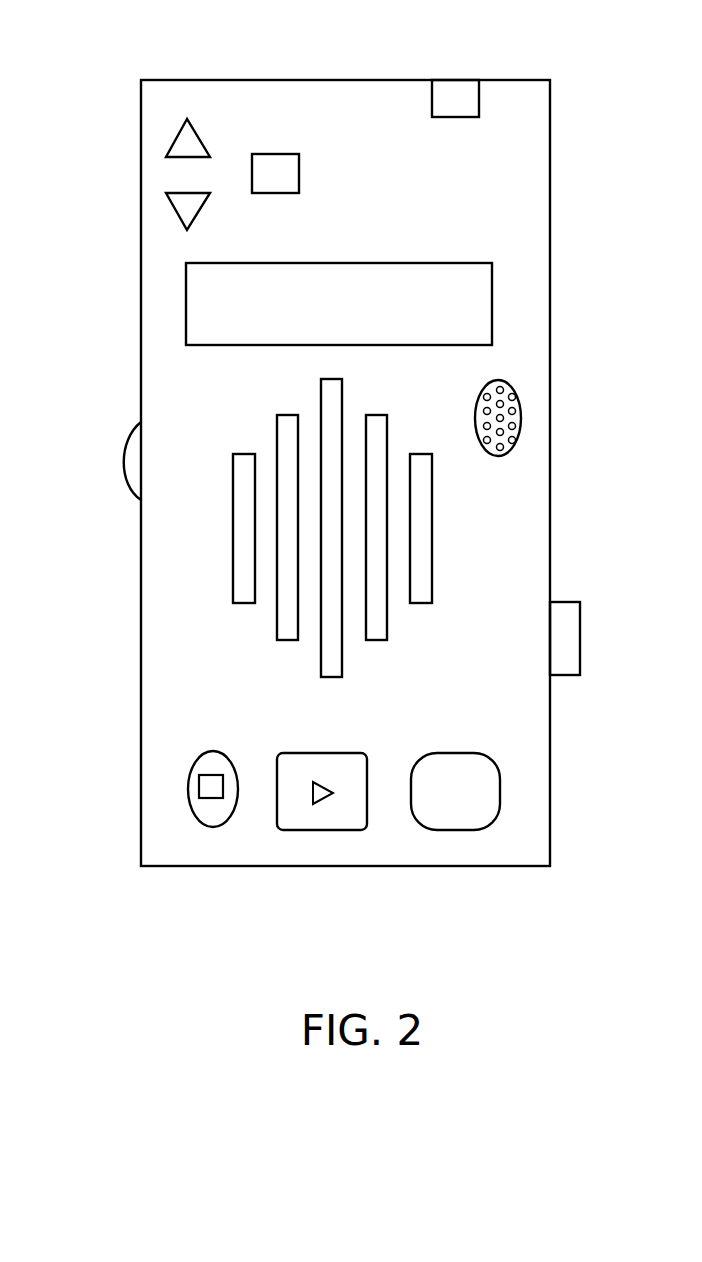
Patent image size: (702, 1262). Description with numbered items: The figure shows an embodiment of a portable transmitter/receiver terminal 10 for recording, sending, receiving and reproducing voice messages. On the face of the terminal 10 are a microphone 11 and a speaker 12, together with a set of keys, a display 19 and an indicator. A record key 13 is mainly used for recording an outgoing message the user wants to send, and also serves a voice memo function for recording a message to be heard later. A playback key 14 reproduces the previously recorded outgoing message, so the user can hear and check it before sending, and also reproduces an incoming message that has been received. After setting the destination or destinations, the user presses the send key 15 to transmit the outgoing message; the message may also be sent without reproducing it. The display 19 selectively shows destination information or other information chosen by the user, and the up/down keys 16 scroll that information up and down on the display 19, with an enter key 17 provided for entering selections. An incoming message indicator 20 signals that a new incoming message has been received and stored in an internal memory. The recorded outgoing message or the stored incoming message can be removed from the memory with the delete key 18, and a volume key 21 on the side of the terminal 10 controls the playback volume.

The portable transmitter/receiver terminal 10 is at (513, 940).
The microphone 11 is at (522, 410).
The speaker 12 is at (244, 436).
The record key 13 is at (215, 752).
The playback key 14 is at (320, 829).
The send key 15 is at (465, 754).
The up/down keys 16 is at (183, 203).
The enter key 17 is at (299, 178).
The delete key 18 is at (565, 602).
The display 19 is at (415, 263).
The incoming message indicator 20 is at (447, 88).
The volume key 21 is at (128, 470).